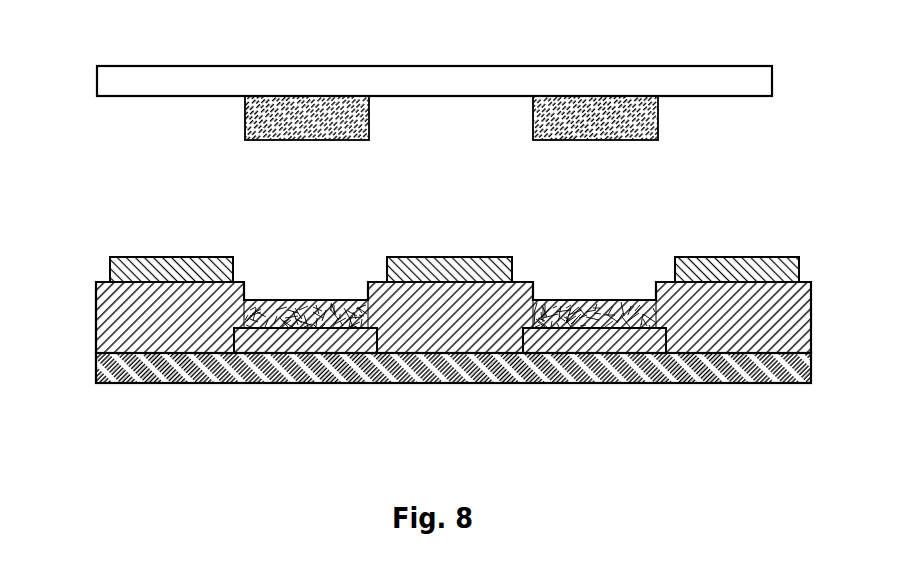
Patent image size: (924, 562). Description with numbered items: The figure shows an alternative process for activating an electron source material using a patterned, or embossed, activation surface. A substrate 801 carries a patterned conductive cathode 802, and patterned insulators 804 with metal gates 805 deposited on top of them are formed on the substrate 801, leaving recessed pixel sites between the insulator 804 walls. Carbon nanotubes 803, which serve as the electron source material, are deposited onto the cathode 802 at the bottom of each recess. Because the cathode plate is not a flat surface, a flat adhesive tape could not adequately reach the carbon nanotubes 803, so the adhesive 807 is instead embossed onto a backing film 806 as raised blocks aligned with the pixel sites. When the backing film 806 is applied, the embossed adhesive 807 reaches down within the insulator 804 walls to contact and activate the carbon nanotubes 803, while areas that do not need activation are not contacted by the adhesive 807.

The substrate 801 is at (412, 384).
The conductive cathode 802 is at (275, 343).
The carbon nanotubes 803 is at (315, 297).
The insulator 804 is at (97, 348).
The metal gate 805 is at (135, 237).
The backing film 806 is at (758, 66).
The adhesive 807 is at (252, 148).